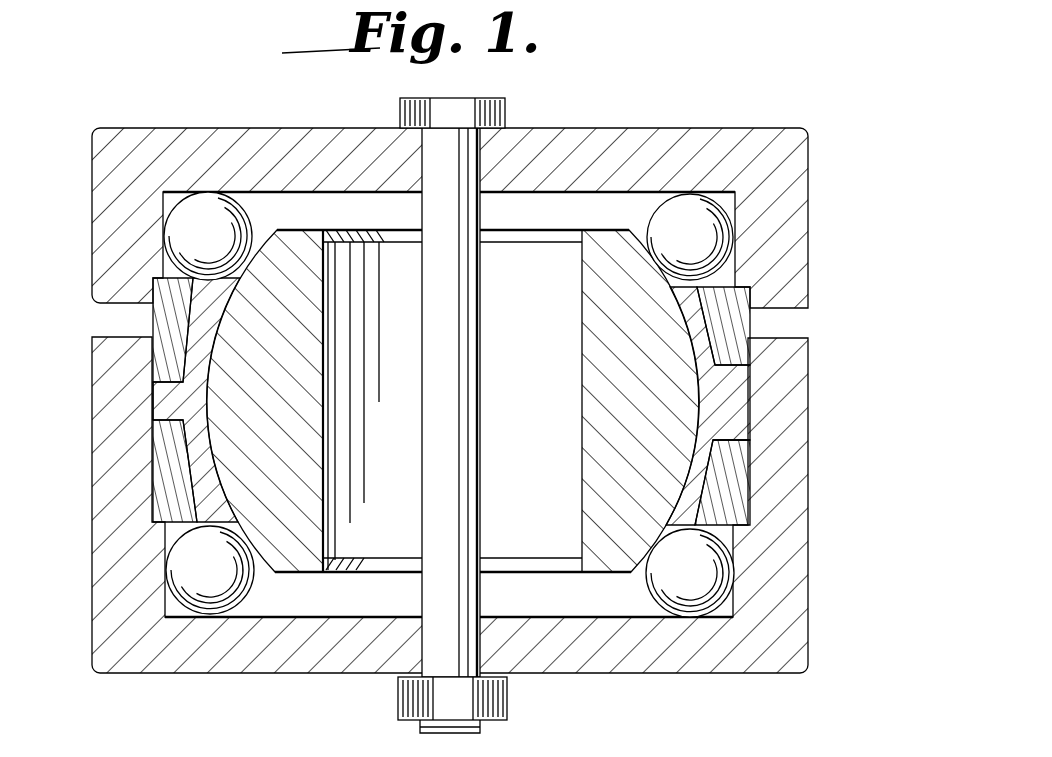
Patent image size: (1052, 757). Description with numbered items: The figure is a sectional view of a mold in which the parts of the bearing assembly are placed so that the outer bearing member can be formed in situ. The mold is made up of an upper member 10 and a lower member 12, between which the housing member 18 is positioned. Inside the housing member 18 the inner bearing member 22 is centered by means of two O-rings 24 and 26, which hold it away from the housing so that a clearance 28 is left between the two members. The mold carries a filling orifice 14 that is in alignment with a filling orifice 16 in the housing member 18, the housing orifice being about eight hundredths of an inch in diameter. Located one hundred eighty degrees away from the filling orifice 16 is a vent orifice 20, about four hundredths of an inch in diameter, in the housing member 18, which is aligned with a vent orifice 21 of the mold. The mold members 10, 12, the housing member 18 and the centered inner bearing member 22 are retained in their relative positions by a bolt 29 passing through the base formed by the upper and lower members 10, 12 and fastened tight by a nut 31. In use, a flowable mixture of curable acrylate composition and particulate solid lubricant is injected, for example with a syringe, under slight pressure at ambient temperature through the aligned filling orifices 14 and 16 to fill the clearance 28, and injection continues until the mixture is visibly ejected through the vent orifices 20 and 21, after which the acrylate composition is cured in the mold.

The upper mold member 10 is at (745, 106).
The lower mold member 12 is at (800, 641).
The filling orifice 14 is at (750, 390).
The filling orifice 16 is at (750, 420).
The housing member 18 is at (153, 470).
The vent orifice 20 is at (153, 388).
The vent orifice 21 is at (153, 412).
The inner bearing member 22 is at (660, 270).
The O-ring 24 is at (720, 237).
The O-ring 26 is at (713, 571).
The clearance 28 is at (745, 440).
The bolt 29 is at (467, 522).
The nut 31 is at (493, 702).